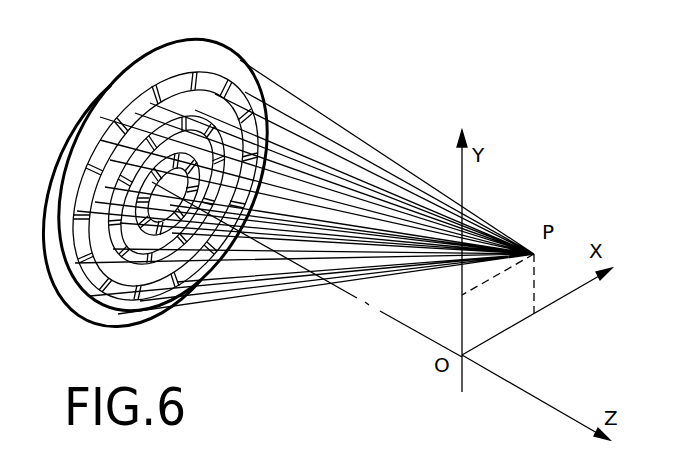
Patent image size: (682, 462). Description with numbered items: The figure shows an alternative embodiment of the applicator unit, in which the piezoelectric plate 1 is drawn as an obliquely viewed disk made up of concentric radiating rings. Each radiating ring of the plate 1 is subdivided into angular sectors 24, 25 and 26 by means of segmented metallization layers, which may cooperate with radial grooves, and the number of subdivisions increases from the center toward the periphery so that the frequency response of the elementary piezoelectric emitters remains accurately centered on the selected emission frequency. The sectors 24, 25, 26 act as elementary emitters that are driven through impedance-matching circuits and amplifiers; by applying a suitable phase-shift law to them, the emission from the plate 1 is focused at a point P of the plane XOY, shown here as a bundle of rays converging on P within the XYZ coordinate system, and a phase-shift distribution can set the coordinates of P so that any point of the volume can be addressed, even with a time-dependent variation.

The plate 1 is at (170, 44).
The angular sector 24 is at (236, 72).
The angular sector 25 is at (188, 112).
The angular sector 26 is at (147, 147).